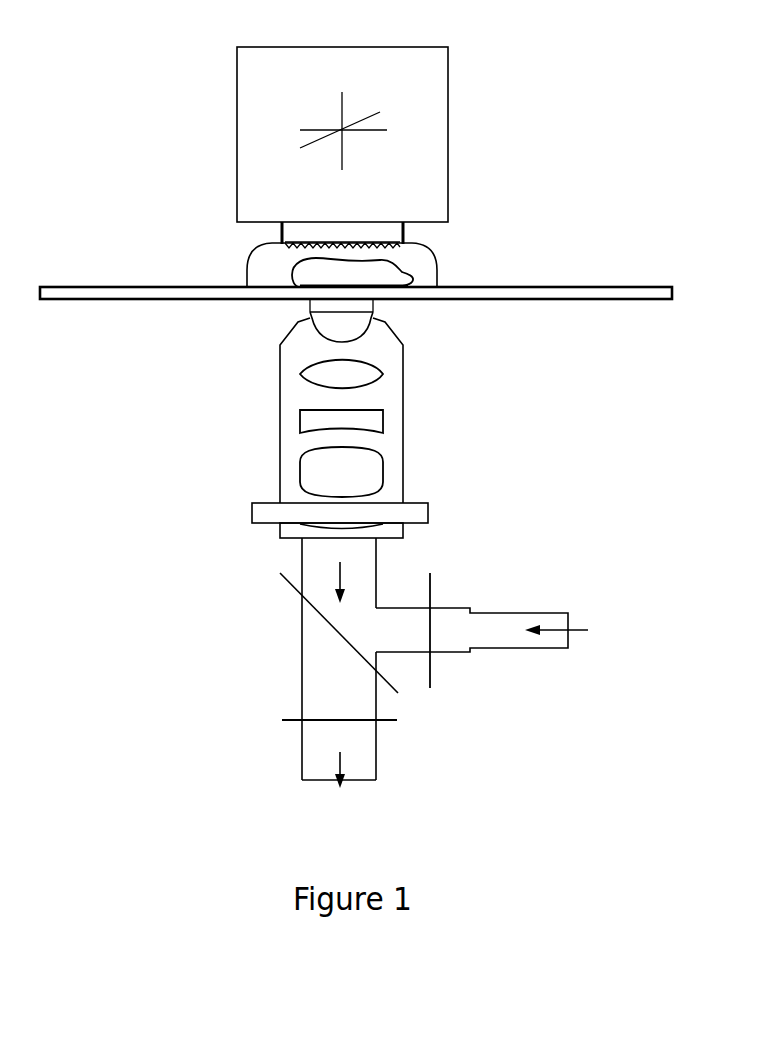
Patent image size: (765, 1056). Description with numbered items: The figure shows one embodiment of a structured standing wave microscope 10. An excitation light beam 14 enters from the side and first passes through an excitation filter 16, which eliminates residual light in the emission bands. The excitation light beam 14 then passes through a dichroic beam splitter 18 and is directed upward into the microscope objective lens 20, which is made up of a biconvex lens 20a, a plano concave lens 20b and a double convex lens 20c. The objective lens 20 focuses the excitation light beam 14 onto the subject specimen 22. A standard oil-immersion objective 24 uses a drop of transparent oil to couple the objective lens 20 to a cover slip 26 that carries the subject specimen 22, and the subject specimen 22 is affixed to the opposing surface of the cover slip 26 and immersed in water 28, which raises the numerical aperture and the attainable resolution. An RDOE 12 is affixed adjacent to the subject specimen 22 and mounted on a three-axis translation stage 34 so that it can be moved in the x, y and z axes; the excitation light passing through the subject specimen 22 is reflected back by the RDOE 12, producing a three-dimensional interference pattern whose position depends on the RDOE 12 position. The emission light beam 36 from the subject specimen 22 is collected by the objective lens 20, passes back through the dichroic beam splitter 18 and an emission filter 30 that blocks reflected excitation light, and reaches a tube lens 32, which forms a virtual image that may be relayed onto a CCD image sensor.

The structured standing wave microscope 10 is at (582, 57).
The RDOE 12 is at (282, 231).
The excitation light beam 14 is at (495, 630).
The excitation filter 16 is at (432, 673).
The dichroic beam splitter 18 is at (320, 617).
The microscope objective lens 20 is at (346, 428).
The biconvex lens 20a is at (300, 372).
The plano concave lens 20b is at (300, 421).
The double convex lens 20c is at (383, 473).
The subject specimen 22 is at (404, 273).
The oil-immersion objective 24 is at (305, 312).
The cover slip 26 is at (612, 288).
The water 28 is at (247, 260).
The emission filter 30 is at (288, 720).
The tube lens 32 is at (339, 787).
The three-axis translation stage 34 is at (448, 165).
The emission light beam 36 is at (343, 582).